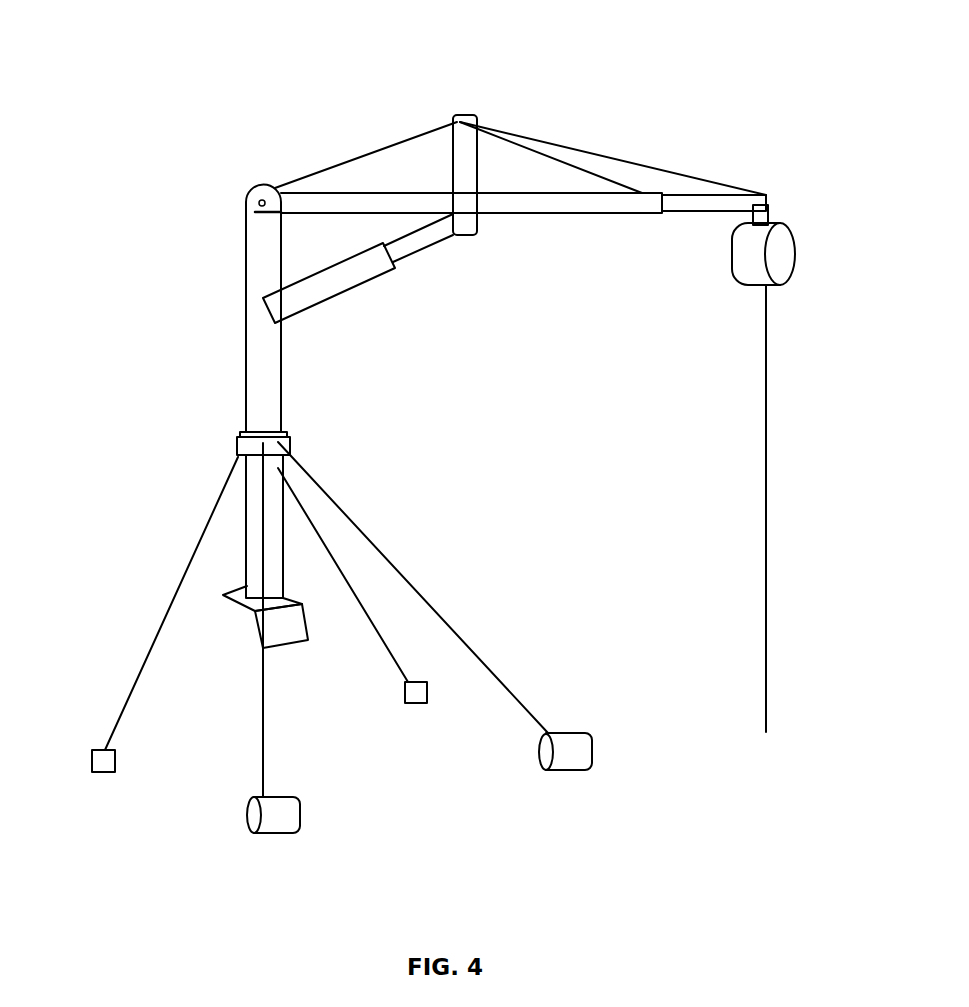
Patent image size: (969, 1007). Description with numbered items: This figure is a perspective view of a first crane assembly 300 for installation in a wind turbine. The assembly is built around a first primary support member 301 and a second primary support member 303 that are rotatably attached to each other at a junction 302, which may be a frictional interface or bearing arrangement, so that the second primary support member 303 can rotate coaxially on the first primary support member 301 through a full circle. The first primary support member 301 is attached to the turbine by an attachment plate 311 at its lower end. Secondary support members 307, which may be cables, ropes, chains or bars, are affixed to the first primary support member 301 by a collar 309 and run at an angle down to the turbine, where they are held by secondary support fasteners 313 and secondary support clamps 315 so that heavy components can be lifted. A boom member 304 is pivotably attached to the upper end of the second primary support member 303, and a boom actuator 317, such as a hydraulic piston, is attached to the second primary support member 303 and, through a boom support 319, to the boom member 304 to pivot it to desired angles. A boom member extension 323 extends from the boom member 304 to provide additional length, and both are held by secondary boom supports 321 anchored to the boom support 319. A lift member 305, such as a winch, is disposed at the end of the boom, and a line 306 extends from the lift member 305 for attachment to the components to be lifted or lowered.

The first crane assembly 300 is at (149, 43).
The first primary support member 301 is at (260, 513).
The junction 302 is at (282, 434).
The second primary support member 303 is at (258, 355).
The boom member 304 is at (593, 203).
The lift member 305 is at (783, 258).
The line 306 is at (772, 412).
The secondary support members 307 is at (158, 616).
The collar 309 is at (247, 446).
The attachment plate 311 is at (247, 606).
The secondary support fasteners 313 is at (293, 818).
The secondary support clamps 315 is at (98, 760).
The boom actuator 317 is at (352, 288).
The boom support 319 is at (465, 158).
The secondary boom supports 321 is at (375, 150).
The boom member extension 323 is at (708, 203).